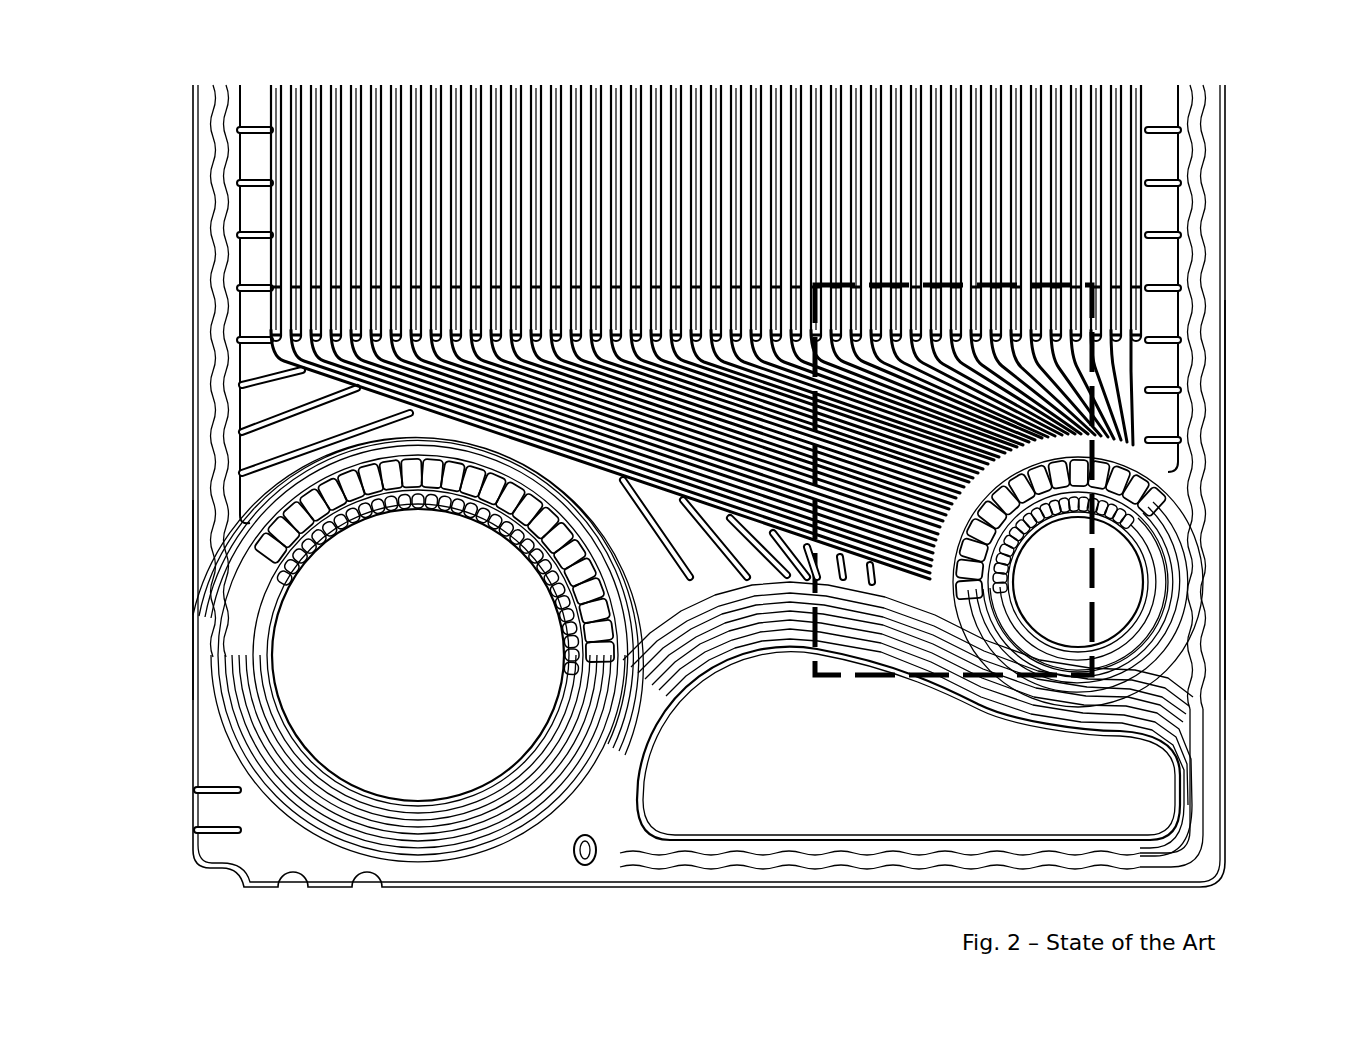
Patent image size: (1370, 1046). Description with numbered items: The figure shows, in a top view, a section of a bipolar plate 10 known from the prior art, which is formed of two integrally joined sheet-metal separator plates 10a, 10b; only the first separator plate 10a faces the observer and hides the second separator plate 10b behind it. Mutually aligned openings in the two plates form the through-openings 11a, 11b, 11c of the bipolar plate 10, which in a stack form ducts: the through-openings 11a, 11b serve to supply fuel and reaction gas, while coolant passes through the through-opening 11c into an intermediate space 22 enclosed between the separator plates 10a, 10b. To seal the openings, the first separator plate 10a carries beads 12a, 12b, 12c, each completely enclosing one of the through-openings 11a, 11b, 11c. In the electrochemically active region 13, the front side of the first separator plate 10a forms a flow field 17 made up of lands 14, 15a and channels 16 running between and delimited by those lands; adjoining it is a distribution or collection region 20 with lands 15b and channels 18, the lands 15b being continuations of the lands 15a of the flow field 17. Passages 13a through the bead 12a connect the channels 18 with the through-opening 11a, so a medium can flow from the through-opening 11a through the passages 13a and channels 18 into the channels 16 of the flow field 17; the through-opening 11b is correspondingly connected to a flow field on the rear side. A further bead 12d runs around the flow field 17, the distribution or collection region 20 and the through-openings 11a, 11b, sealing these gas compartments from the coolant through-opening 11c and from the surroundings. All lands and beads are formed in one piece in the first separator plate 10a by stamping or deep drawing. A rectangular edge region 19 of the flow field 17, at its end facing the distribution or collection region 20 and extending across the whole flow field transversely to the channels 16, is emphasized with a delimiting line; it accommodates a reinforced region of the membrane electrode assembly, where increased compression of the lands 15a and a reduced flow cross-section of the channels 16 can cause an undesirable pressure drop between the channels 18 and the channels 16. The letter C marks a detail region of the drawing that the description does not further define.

The bipolar plate 10 is at (1226, 813).
The first separator plate 10a is at (1226, 500).
The second separator plate 10b is at (183, 600).
The through-opening 11a is at (1078, 582).
The through-opening 11b is at (418, 655).
The through-opening 11c is at (908, 743).
The bead 12a is at (1148, 628).
The bead 12b is at (423, 825).
The bead 12c is at (755, 848).
The further bead 12d is at (222, 434).
The electrochemically active region 13 is at (165, 85).
The passages 13a is at (1147, 450).
The lands 14 is at (500, 85).
The lands 15a is at (308, 85).
The lands 15b is at (462, 420).
The channels 16 is at (735, 85).
The flow field 17 is at (1100, 80).
The channels 18 is at (1030, 452).
The rectangular edge region 19 is at (165, 290).
The distribution or collection region 20 is at (673, 418).
The intermediate space 22 is at (736, 681).
The detail region C is at (940, 283).